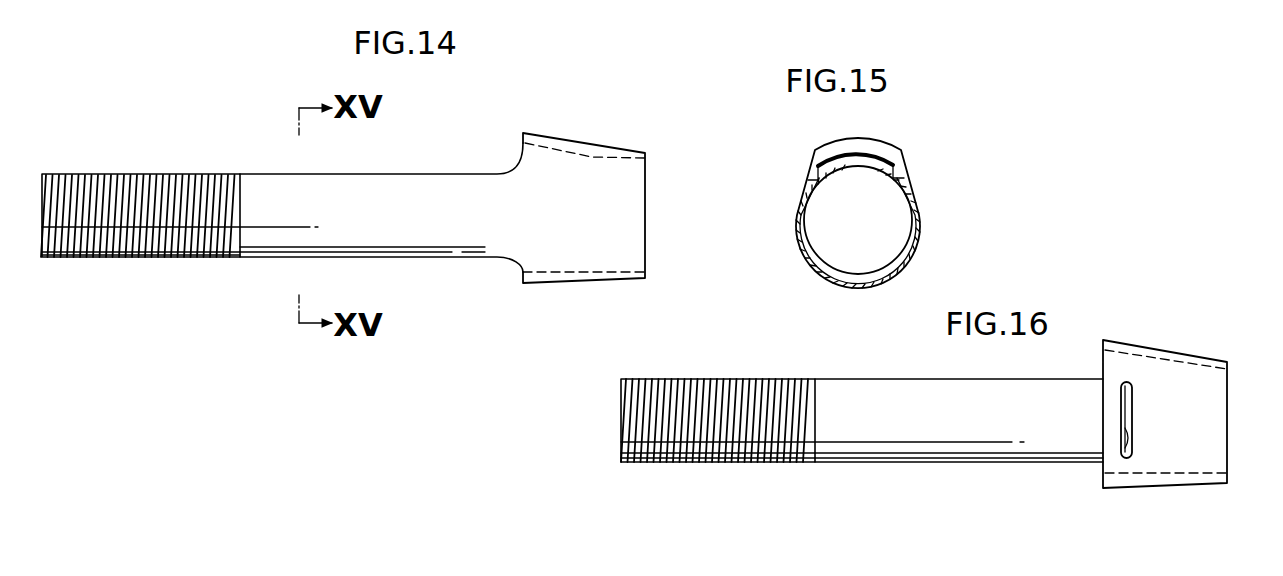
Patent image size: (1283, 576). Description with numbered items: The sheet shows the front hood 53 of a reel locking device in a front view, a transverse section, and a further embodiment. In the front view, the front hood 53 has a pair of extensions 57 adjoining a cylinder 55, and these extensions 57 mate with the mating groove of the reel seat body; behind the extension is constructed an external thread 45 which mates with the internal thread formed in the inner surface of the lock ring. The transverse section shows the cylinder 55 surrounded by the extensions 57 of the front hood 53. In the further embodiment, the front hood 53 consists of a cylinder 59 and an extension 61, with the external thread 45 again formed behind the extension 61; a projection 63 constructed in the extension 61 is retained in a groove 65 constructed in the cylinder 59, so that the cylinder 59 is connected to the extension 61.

In FIG. 14, the external thread 45 is at (162, 240).
In FIG. 16, the external thread 45 is at (733, 445).
In FIG. 14, the front hood 53 is at (590, 140).
In FIG. 15, the front hood 53 is at (902, 158).
In FIG. 16, the front hood 53 is at (1165, 341).
In FIG. 14, the cylinder 55 is at (573, 279).
In FIG. 15, the cylinder 55 is at (868, 281).
In FIG. 14, the extensions 57 is at (438, 236).
In FIG. 15, the extensions 57 is at (797, 211).
In FIG. 16, the cylinder 59 is at (1172, 486).
In FIG. 16, the extension 61 is at (890, 435).
In FIG. 16, the projection 63 is at (1128, 418).
In FIG. 16, the groove 65 is at (1122, 452).